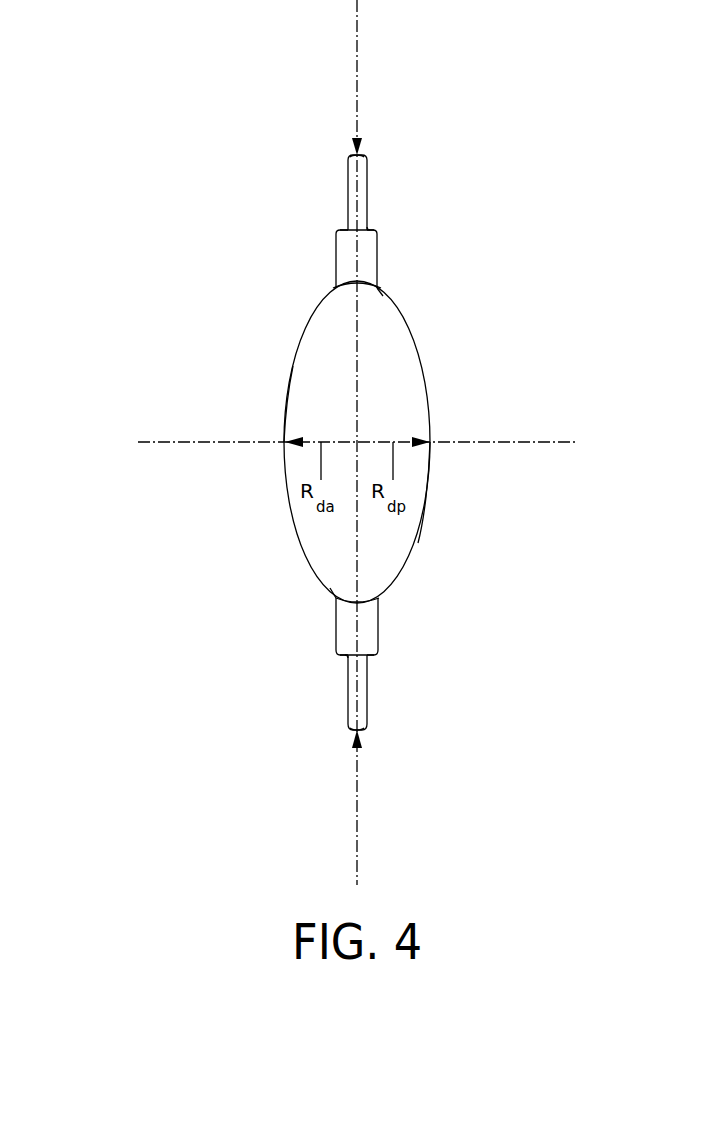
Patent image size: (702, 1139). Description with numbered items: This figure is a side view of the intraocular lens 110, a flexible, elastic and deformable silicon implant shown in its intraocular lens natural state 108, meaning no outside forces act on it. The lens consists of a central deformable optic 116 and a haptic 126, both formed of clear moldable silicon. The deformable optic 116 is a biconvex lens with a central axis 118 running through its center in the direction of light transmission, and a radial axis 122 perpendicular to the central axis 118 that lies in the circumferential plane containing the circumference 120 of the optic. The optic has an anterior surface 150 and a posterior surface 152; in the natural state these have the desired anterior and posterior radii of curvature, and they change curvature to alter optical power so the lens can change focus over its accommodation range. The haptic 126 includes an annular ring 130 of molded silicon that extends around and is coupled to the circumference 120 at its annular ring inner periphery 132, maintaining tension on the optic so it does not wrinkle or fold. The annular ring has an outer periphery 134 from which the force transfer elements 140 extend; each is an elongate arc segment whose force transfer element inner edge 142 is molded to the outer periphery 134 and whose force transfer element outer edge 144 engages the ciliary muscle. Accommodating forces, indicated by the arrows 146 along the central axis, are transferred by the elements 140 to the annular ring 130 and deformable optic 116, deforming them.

The intraocular lens natural state 108 is at (483, 708).
The intraocular lens 110 is at (100, 178).
The deformable optic 116 is at (395, 353).
The central axis 118 is at (528, 442).
The circumference 120 is at (381, 281).
The radial axis 122 is at (357, 22).
The haptic 126 is at (252, 664).
The annular ring 130 is at (370, 258).
The annular ring inner periphery 132 is at (333, 283).
The outer periphery 134 is at (343, 230).
The force transfer element 140 is at (368, 192).
The force transfer element inner edge 142 is at (378, 228).
The force transfer element outer edge 144 is at (355, 156).
The applied force 146 is at (357, 117).
The anterior surface 150 is at (292, 366).
The posterior surface 152 is at (418, 543).